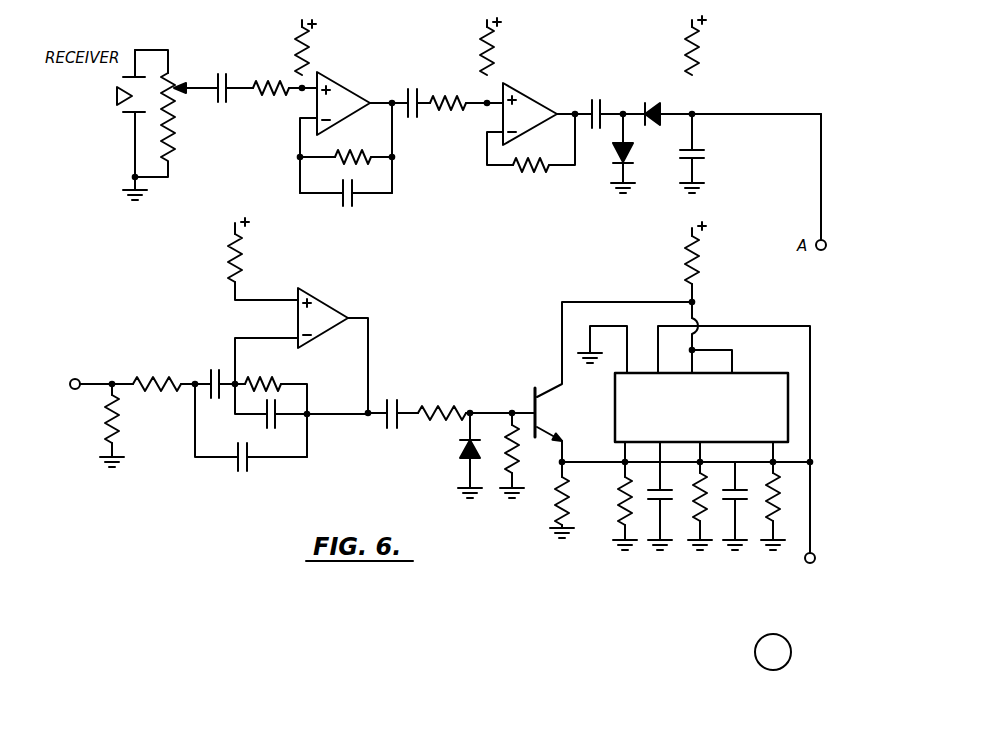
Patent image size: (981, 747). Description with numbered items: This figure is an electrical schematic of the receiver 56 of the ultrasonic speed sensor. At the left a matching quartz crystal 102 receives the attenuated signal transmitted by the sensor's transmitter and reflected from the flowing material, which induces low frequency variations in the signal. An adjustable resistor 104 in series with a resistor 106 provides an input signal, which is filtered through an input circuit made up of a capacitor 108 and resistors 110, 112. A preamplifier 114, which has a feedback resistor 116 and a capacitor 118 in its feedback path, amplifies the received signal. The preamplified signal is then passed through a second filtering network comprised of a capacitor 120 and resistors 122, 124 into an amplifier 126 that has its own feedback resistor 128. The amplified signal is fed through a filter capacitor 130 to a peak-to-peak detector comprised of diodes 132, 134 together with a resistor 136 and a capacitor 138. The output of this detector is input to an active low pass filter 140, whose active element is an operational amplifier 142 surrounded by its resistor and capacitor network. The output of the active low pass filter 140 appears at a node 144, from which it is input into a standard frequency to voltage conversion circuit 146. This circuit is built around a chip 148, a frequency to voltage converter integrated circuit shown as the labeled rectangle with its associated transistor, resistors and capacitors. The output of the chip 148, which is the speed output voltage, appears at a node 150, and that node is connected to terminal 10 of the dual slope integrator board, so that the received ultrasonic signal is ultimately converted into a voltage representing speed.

The terminal 10 is at (773, 652).
The receiver 56 is at (278, 510).
The quartz crystal 102 is at (120, 113).
The adjustable resistor 104 is at (176, 82).
The resistor 106 is at (172, 152).
The capacitor 108 is at (218, 102).
The resistor 110 is at (283, 84).
The resistor 112 is at (308, 50).
The preamplifier 114 is at (355, 88).
The feedback resistor 116 is at (352, 152).
The capacitor 118 is at (345, 208).
The capacitor 120 is at (410, 120).
The resistor 122 is at (441, 92).
The resistor 124 is at (498, 55).
The amplifier 126 is at (533, 102).
The feedback resistor 128 is at (547, 170).
The filter capacitor 130 is at (598, 95).
The diode 132 is at (612, 153).
The diode 134 is at (648, 98).
The resistor 136 is at (702, 49).
The capacitor 138 is at (705, 155).
The active low pass filter 140 is at (190, 354).
The operational amplifier 142 is at (330, 307).
The node 144 is at (378, 400).
The frequency to voltage conversion circuit 146 is at (527, 511).
The chip 148 is at (762, 373).
The node 150 is at (804, 561).